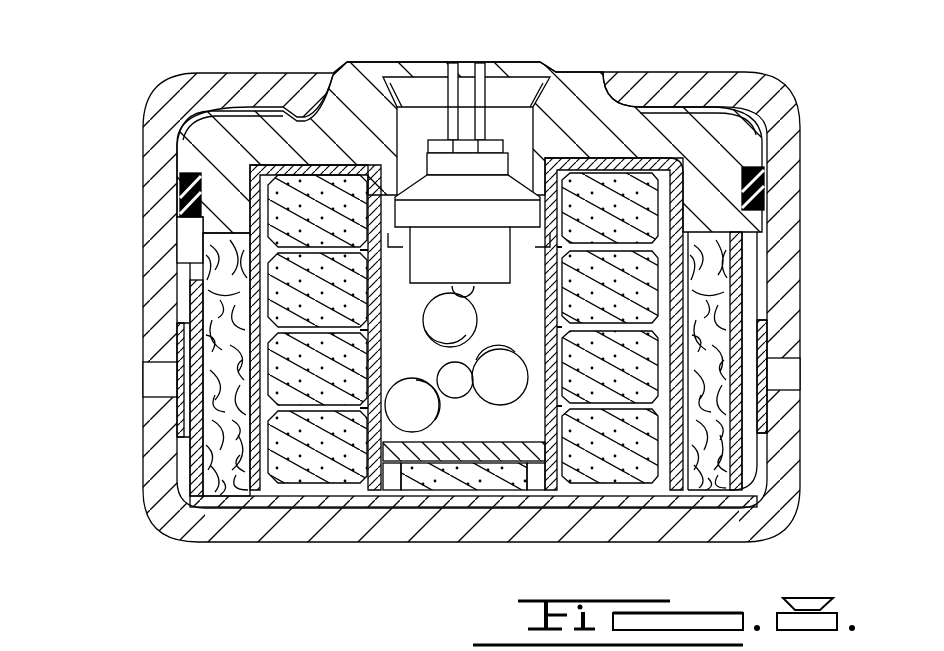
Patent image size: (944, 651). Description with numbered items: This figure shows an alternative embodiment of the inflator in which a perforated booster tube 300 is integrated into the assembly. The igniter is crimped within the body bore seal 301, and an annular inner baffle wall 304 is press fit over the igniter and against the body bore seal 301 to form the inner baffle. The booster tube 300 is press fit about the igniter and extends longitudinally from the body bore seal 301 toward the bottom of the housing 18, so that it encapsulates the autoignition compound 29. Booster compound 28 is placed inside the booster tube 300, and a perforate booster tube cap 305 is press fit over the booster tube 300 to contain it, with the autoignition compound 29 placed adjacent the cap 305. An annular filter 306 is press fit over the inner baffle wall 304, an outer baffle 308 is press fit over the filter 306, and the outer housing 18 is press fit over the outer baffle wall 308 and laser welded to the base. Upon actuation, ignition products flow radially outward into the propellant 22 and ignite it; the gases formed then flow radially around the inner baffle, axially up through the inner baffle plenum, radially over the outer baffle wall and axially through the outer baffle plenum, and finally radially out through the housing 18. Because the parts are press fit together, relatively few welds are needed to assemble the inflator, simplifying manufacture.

The housing 18 is at (142, 128).
The propellant 22 is at (620, 183).
The booster compound 28 is at (423, 420).
The autoignition compound 29 is at (527, 480).
The perforated booster tube 300 is at (550, 403).
The body bore seal 301 is at (573, 103).
The annular inner baffle wall 304 is at (310, 164).
The perforate booster tube cap 305 is at (497, 447).
The annular filter 306 is at (210, 473).
The outer baffle 308 is at (240, 485).